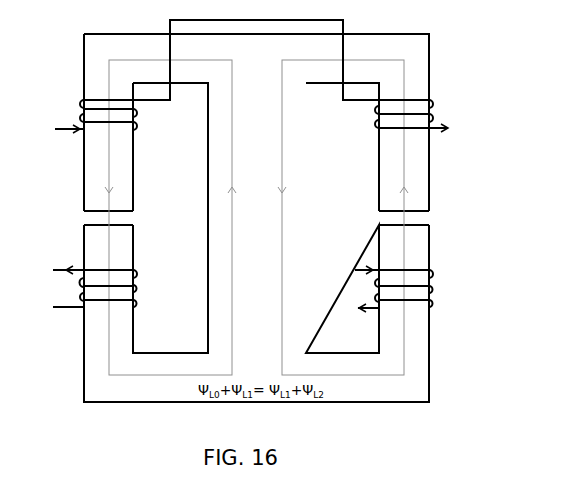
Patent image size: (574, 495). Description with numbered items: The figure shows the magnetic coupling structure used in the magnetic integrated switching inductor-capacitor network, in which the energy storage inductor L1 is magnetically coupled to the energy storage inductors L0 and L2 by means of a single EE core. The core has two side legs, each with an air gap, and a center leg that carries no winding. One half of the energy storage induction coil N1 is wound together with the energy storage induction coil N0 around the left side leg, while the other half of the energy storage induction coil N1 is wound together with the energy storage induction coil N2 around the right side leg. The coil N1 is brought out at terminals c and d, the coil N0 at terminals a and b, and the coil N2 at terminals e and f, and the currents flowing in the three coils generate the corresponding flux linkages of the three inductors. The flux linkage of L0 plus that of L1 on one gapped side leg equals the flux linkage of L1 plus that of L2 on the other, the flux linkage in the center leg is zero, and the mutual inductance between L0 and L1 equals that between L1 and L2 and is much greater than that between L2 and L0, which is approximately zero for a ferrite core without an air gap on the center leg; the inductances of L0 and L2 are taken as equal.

The energy storage inductor L0 is at (72, 286).
The energy storage inductor L1 is at (264, 75).
The energy storage inductor L2 is at (405, 289).
The energy storage induction coil N0 is at (161, 289).
The energy storage induction coil N1 is at (255, 121).
The energy storage induction coil N2 is at (326, 289).
The terminal a is at (39, 307).
The terminal b is at (52, 266).
The terminal c is at (58, 123).
The terminal d is at (459, 124).
The terminal e is at (356, 266).
The terminal f is at (347, 309).